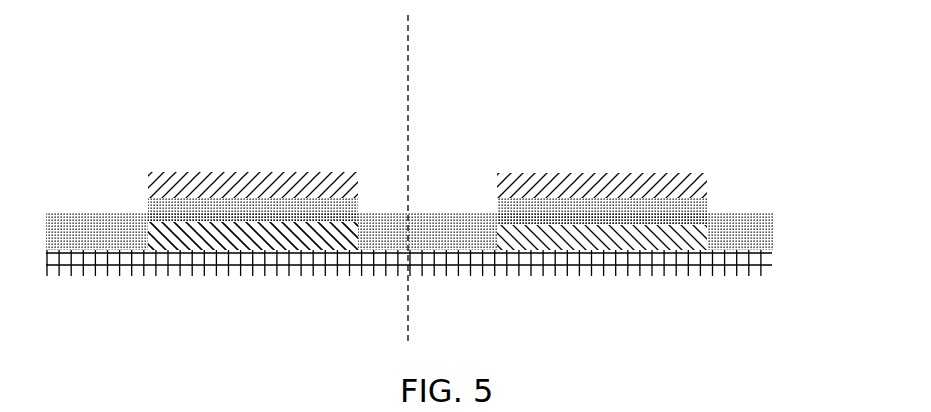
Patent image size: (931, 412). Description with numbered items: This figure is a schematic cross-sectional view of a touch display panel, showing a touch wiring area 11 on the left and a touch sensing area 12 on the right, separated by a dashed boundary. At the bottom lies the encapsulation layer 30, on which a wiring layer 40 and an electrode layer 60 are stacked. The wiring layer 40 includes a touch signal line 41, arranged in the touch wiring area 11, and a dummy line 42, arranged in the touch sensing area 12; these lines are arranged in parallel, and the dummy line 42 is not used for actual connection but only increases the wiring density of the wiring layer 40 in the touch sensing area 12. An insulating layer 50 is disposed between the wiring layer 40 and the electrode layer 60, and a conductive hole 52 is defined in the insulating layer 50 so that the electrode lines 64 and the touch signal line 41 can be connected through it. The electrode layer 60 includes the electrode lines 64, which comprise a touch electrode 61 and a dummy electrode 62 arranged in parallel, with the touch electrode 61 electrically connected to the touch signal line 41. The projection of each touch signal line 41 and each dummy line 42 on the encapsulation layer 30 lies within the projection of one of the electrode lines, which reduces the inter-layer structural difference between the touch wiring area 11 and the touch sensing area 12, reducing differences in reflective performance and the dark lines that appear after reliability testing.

The touch wiring area 11 is at (280, 28).
The touch sensing area 12 is at (595, 27).
The encapsulation layer 30 is at (774, 265).
The wiring layer 40 is at (146, 235).
The touch signal line 41 is at (252, 243).
The dummy line 42 is at (597, 243).
The insulating layer 50 is at (774, 233).
The conductive hole 52 is at (460, 194).
The electrode layer 60 is at (147, 181).
The touch electrode 61 is at (615, 174).
The dummy electrode 62 is at (258, 172).
The electrode line 64 is at (700, 191).